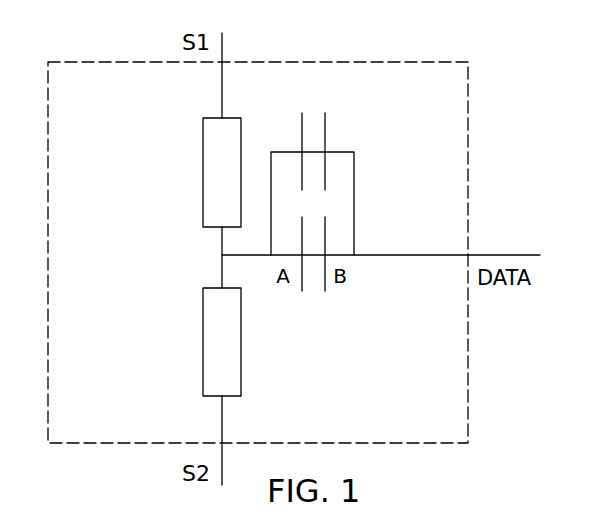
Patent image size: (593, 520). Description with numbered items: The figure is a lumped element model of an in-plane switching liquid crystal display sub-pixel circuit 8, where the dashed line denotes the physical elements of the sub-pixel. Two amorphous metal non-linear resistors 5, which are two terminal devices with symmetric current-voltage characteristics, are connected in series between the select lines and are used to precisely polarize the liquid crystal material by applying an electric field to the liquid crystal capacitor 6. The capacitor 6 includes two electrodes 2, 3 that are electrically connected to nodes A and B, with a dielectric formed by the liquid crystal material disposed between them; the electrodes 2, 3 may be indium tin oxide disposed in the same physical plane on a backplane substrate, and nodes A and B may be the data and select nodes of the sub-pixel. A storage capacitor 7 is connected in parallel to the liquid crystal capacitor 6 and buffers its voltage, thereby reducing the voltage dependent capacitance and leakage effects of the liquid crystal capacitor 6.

The electrode 2 is at (326, 291).
The electrode 3 is at (300, 291).
The amorphous metal non-linear resistor 5 is at (194, 152).
The capacitor 6 is at (315, 301).
The storage capacitor 7 is at (337, 134).
The sub-pixel circuit 8 is at (478, 153).